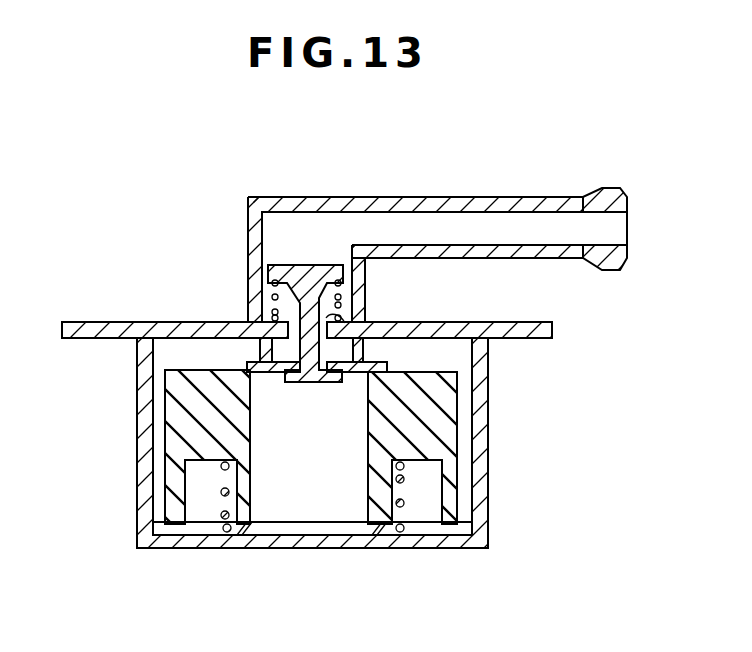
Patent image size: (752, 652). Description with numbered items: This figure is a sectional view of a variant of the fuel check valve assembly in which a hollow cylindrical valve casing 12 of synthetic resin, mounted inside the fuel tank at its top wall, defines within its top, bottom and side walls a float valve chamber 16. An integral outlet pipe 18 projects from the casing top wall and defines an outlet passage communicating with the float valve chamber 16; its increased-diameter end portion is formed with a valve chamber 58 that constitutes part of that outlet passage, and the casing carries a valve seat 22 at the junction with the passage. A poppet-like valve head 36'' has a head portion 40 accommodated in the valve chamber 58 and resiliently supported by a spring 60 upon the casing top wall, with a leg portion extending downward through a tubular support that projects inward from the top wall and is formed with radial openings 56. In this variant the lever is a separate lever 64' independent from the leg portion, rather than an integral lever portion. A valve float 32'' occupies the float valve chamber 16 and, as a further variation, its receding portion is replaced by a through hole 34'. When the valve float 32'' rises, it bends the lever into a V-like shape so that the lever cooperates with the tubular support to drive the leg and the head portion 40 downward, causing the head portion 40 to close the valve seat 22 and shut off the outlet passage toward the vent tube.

The valve casing 12 is at (496, 405).
The float valve chamber 16 is at (170, 358).
The outlet pipe 18 is at (613, 200).
The valve seat 22 is at (350, 325).
The valve float 32'' is at (381, 451).
The through hole 34' is at (312, 555).
The valve head 36'' is at (308, 249).
The head portion 40 is at (272, 308).
The radial openings 56 is at (362, 348).
The valve chamber 58 is at (268, 245).
The spring 60 is at (343, 290).
The lever 64' is at (271, 489).